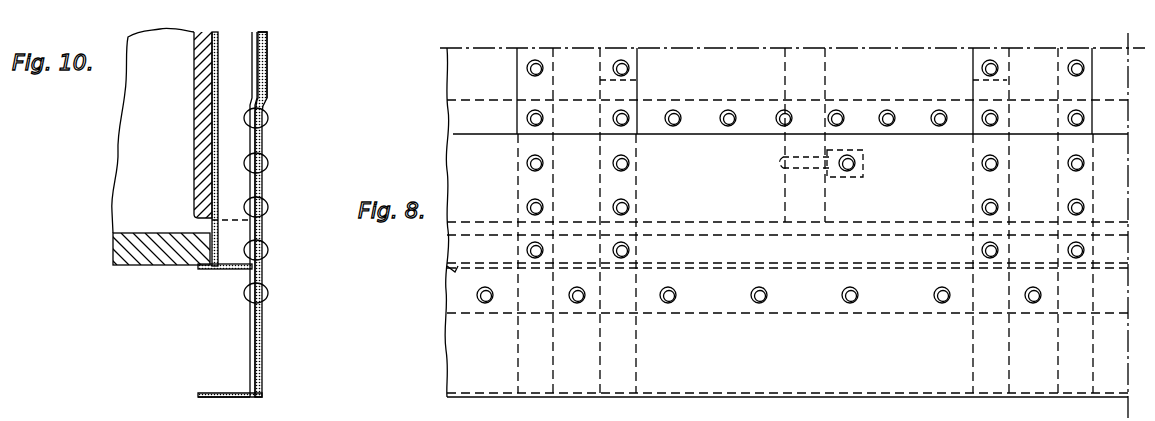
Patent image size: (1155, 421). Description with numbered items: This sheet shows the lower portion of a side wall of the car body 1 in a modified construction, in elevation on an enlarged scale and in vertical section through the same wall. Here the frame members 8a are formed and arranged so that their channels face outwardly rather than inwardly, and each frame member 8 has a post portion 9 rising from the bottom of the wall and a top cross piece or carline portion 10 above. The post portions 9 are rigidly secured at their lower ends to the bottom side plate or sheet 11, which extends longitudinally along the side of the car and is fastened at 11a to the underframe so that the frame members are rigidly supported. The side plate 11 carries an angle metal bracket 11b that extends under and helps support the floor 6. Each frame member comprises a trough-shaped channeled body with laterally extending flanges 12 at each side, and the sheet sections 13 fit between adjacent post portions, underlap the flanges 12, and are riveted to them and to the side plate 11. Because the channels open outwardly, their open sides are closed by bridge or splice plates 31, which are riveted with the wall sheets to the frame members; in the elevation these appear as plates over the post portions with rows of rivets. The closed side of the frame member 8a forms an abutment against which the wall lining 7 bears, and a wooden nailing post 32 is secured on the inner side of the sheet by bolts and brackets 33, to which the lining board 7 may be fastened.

In FIG. 10, the car body 1 is at (117, 121).
In FIG. 10, the floor 6 is at (146, 262).
In FIG. 10, the lining 7 is at (194, 137).
In FIG. 8, the lining 7 is at (787, 234).
In FIG. 10, the frame member 8 is at (228, 80).
In FIG. 8, the frame member with outwardly facing channel 8a is at (640, 82).
In FIG. 8, the post portion 9 is at (784, 225).
In FIG. 8, the top cross piece or carline portion 10 is at (799, 223).
In FIG. 10, the bottom side plate or sheet 11 is at (260, 337).
In FIG. 8, the bottom side plate or sheet 11 is at (453, 345).
In FIG. 10, the fastening to underframe 11a is at (266, 252).
In FIG. 10, the angle metal bracket 11b is at (223, 270).
In FIG. 10, the laterally extending flange 12 is at (258, 63).
In FIG. 10, the sheet section 13 is at (265, 92).
In FIG. 8, the sheet section 13 is at (458, 97).
In FIG. 10, the bridge or splice plate 31 is at (267, 78).
In FIG. 8, the bridge or splice plate 31 is at (527, 80).
In FIG. 8, the wooden nailing post 32 is at (778, 160).
In FIG. 8, the bolts and brackets 33 is at (846, 176).